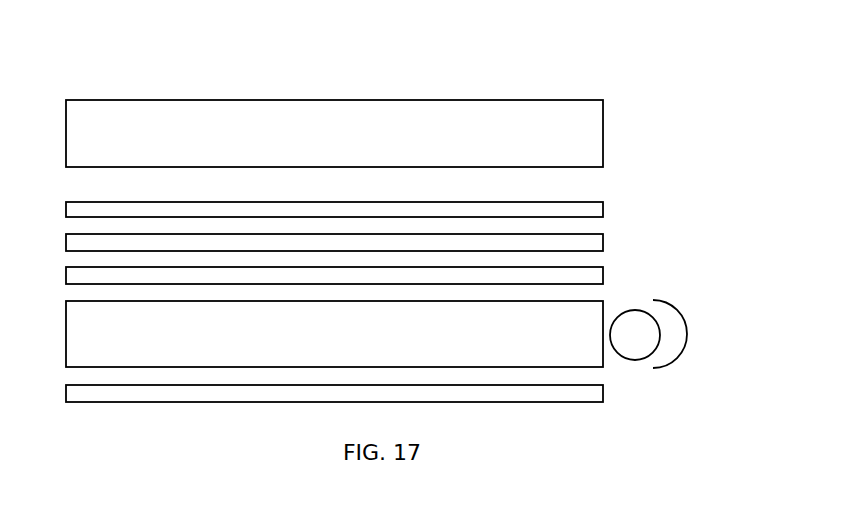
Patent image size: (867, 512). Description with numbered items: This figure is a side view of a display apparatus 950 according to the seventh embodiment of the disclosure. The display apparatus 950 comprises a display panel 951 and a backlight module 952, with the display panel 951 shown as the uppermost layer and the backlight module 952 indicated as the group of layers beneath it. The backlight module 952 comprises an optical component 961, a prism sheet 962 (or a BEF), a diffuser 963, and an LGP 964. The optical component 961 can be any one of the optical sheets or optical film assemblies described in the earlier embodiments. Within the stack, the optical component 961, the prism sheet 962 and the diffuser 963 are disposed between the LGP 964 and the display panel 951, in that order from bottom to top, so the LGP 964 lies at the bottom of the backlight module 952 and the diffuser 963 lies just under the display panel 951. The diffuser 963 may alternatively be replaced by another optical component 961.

The display apparatus 950 is at (334, 218).
The display panel 951 is at (585, 133).
The backlight module 952 is at (702, 152).
The optical component 961 is at (588, 277).
The prism sheet 962 is at (588, 247).
The diffuser 963 is at (587, 208).
The LGP 964 is at (582, 313).